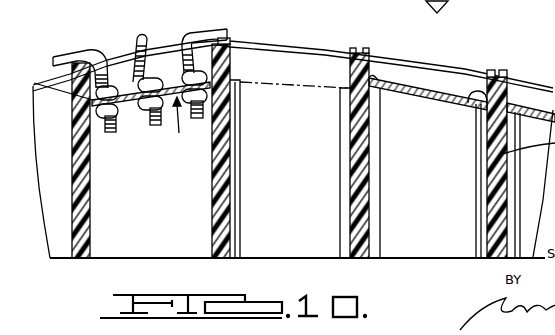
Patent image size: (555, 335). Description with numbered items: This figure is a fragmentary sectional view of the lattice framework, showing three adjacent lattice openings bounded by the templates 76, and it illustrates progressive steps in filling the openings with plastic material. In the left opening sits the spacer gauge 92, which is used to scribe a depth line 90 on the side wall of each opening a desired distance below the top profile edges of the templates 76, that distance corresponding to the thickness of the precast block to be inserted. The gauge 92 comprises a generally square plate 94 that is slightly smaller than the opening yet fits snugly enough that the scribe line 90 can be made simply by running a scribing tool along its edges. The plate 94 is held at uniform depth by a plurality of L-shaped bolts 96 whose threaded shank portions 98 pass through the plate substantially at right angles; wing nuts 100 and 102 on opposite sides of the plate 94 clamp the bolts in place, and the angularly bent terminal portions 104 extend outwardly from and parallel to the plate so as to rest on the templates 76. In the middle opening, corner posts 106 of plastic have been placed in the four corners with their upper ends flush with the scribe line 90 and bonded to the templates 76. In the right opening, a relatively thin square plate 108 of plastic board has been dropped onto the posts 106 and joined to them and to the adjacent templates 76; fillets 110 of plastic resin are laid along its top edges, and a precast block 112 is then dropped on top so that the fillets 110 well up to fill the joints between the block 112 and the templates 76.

The templates 76 is at (88, 196).
The scribe line 90 is at (268, 82).
The spacer gauge 92 is at (180, 126).
The plate 94 is at (175, 86).
The L-shaped bolts 96 is at (98, 54).
The threaded shank portions 98 is at (151, 81).
The wing nut 100 is at (52, 81).
The wing nut 102 is at (123, 107).
The angularly bent terminal portions 104 is at (63, 53).
The corner posts 106 is at (340, 118).
The plates 108 is at (392, 92).
The fillets 110 is at (472, 100).
The precast blocks 112 is at (444, 71).